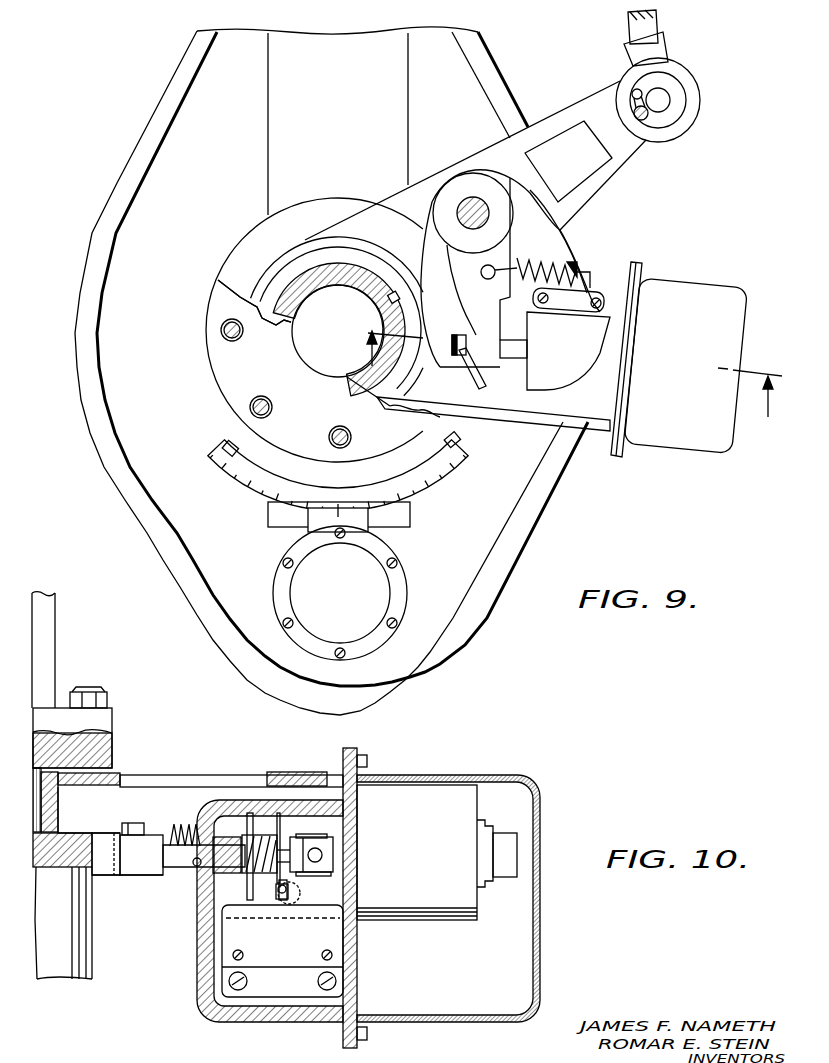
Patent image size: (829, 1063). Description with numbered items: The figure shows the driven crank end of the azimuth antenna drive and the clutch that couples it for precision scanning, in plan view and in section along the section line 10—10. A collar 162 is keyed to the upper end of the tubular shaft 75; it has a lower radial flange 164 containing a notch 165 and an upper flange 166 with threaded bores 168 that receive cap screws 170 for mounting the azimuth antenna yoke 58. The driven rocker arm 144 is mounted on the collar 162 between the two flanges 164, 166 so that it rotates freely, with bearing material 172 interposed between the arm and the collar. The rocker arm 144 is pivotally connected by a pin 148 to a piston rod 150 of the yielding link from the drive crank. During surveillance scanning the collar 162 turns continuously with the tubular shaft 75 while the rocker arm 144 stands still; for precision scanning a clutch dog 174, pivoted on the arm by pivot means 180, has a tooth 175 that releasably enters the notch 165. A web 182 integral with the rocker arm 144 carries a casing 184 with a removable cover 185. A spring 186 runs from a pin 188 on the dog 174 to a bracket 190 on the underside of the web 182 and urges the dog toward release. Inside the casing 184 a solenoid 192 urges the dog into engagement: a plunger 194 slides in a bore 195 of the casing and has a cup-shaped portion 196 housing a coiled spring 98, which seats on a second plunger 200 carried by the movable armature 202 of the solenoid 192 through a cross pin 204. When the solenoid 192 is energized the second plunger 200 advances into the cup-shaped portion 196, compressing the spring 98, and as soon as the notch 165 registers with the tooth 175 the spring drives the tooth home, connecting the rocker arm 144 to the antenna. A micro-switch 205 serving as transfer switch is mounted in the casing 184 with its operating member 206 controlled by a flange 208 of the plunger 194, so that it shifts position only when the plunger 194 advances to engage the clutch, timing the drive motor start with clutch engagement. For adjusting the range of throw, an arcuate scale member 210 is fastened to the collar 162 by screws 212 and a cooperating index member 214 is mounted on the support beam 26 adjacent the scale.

In FIG. 9, the support beam 26 is at (110, 183).
In FIG. 9, the piston rod 150 is at (650, 21).
In FIG. 9, the driven rocker arm 144 is at (565, 117).
In FIG. 9, the pin 148 is at (670, 100).
In FIG. 9, the pivot means 180 is at (467, 197).
In FIG. 9, the lower radial flange 164 is at (248, 236).
In FIG. 10, the lower radial flange 164 is at (82, 852).
In FIG. 9, the collar 162 is at (228, 246).
In FIG. 10, the collar 162 is at (48, 870).
In FIG. 9, the upper flange 166 is at (223, 305).
In FIG. 10, the upper flange 166 is at (104, 751).
In FIG. 9, the tubular shaft 75 is at (345, 276).
In FIG. 10, the tubular shaft 75 is at (58, 985).
In FIG. 9, the cap screws 170 is at (224, 330).
In FIG. 10, the cap screws 170 is at (90, 690).
In FIG. 9, the threaded bores 168 is at (224, 339).
In FIG. 9, the section line 10 is at (559, 381).
In FIG. 9, the dog 174 is at (490, 295).
In FIG. 10, the dog 174 is at (142, 878).
In FIG. 9, the tooth 175 is at (462, 336).
In FIG. 10, the tooth 175 is at (103, 843).
In FIG. 9, the notch 165 is at (464, 352).
In FIG. 10, the notch 165 is at (141, 855).
In FIG. 9, the spring 186 is at (572, 268).
In FIG. 10, the spring 186 is at (190, 830).
In FIG. 9, the pin 188 is at (497, 268).
In FIG. 10, the pin 188 is at (137, 824).
In FIG. 9, the bracket 190 is at (597, 277).
In FIG. 9, the casing 184 is at (568, 351).
In FIG. 10, the casing 184 is at (281, 1023).
In FIG. 9, the plunger 194 is at (520, 360).
In FIG. 10, the plunger 194 is at (177, 860).
In FIG. 9, the web 182 is at (527, 411).
In FIG. 10, the web 182 is at (290, 772).
In FIG. 9, the removable cover 185 is at (741, 321).
In FIG. 10, the removable cover 185 is at (541, 818).
In FIG. 9, the arcuate scale member 210 is at (442, 473).
In FIG. 9, the screws 212 is at (226, 444).
In FIG. 9, the index member 214 is at (341, 538).
In FIG. 10, the azimuth antenna yoke 58 is at (60, 632).
In FIG. 10, the bearing material 172 is at (42, 806).
In FIG. 10, the cup-shaped portion 196 is at (258, 833).
In FIG. 10, the solenoid 192 is at (459, 790).
In FIG. 10, the spring 98 is at (285, 840).
In FIG. 10, the second plunger 200 is at (317, 845).
In FIG. 10, the cross pin 204 is at (322, 857).
In FIG. 10, the movable armature 202 is at (348, 868).
In FIG. 10, the bore 195 is at (195, 868).
In FIG. 10, the flange 208 is at (251, 899).
In FIG. 10, the operating member 206 is at (278, 900).
In FIG. 10, the micro-switch 205 is at (282, 951).